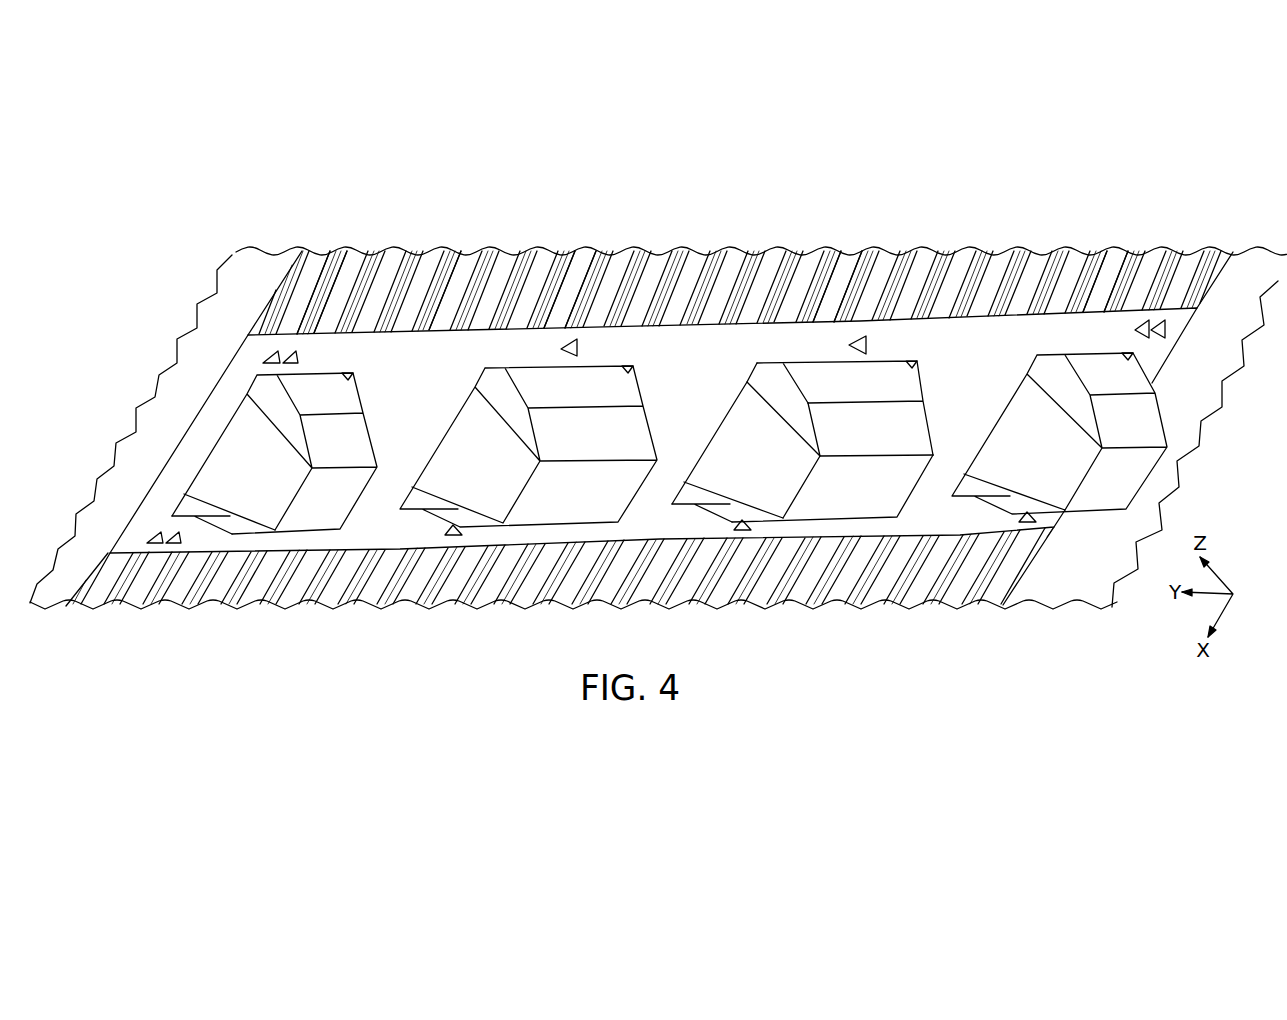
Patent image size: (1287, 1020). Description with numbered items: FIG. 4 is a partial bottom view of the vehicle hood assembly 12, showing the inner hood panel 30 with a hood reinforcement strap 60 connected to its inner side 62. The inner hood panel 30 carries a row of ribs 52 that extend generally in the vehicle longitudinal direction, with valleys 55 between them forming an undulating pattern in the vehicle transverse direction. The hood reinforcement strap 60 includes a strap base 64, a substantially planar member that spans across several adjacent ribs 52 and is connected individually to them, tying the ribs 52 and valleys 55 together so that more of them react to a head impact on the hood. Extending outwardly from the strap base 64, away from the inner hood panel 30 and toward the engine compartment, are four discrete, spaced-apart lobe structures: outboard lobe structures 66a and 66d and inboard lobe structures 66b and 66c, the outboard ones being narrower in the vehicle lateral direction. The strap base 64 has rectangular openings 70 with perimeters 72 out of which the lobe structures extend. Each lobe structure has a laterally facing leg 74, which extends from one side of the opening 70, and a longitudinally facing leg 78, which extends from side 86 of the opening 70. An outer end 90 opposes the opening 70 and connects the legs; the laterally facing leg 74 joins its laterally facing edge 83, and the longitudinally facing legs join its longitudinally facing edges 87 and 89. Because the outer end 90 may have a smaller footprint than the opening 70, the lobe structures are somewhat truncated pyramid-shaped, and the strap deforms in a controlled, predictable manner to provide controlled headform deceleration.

The vehicle hood assembly 12 is at (1175, 150).
The inner hood panel 30 is at (187, 670).
The ribs 52 is at (640, 268).
The valleys 55 is at (463, 262).
The hood reinforcement strap 60 is at (1003, 235).
The inner side 62 is at (272, 643).
The strap base 64 is at (402, 348).
The outboard lobe structure 66a is at (333, 305).
The inboard lobe structure 66b is at (585, 305).
The inboard lobe structure 66c is at (846, 305).
The outboard lobe structure 66d is at (1108, 303).
The openings 70 is at (272, 398).
The perimeters 72 is at (180, 516).
The laterally facing leg 74 is at (728, 442).
The longitudinally facing leg 78 is at (917, 423).
The laterally facing edge 83 is at (897, 497).
The side of the opening 86 is at (787, 520).
The longitudinally facing edge 87 is at (933, 452).
The longitudinally facing edge 89 is at (825, 520).
The outer end 90 is at (560, 511).